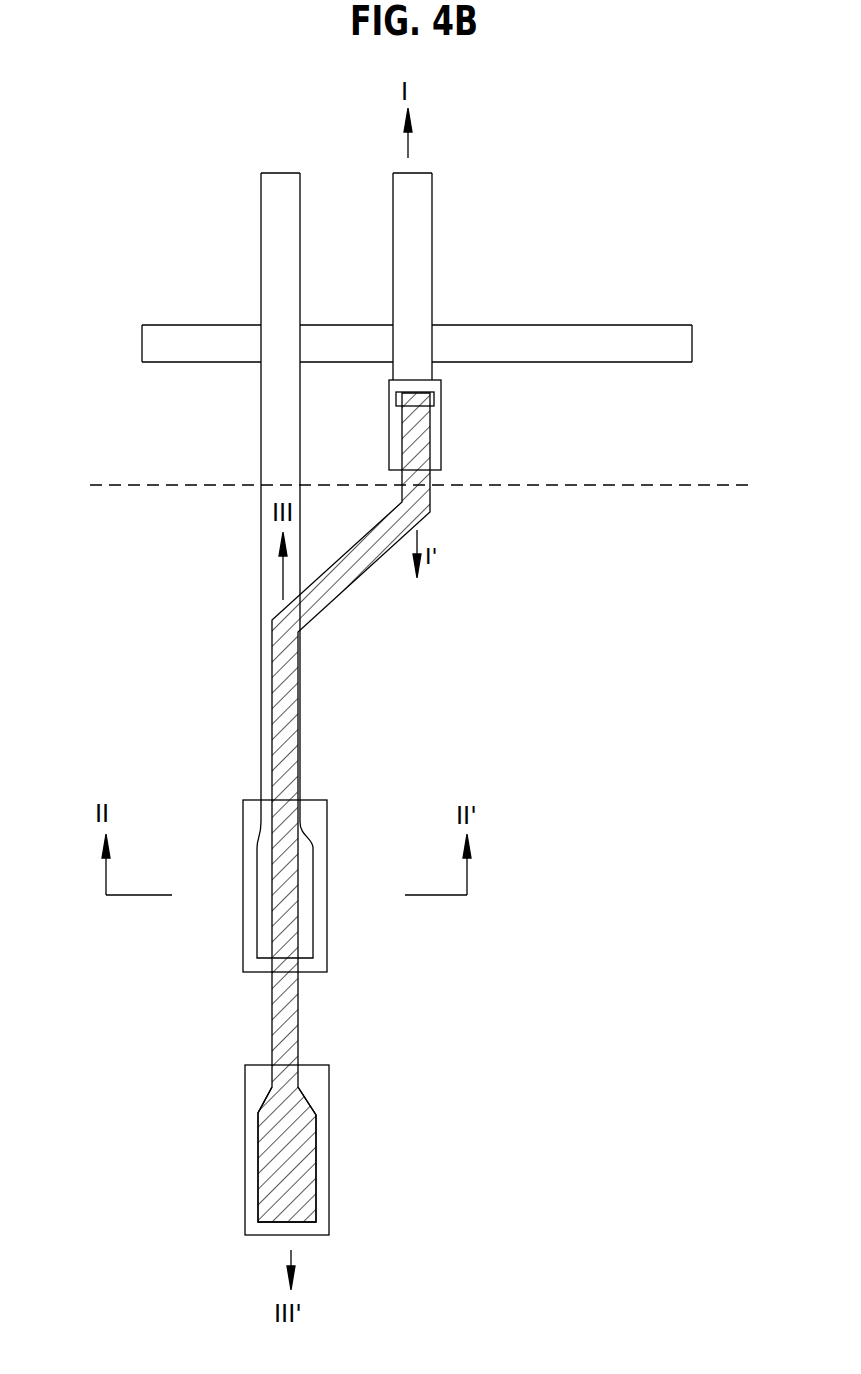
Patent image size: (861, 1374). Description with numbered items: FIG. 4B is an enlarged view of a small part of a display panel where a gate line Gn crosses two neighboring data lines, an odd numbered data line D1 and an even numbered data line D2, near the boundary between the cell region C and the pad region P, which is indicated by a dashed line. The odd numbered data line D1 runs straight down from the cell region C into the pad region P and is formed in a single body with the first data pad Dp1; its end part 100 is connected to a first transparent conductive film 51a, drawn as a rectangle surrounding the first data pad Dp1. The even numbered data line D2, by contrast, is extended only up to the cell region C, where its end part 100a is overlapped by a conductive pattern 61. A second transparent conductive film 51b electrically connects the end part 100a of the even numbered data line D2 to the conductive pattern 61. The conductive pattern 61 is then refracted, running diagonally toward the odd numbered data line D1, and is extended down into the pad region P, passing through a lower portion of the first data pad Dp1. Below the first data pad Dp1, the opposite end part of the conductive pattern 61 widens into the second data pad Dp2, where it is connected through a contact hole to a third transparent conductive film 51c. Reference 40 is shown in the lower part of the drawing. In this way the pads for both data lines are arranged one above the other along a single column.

The gate line Gn is at (145, 340).
The odd numbered data line D1 is at (262, 250).
The even numbered data line D2 is at (394, 250).
The cell region C is at (714, 348).
The pad region P is at (714, 569).
The second transparent conductive film 51b is at (441, 452).
The end part of even numbered data line 100a is at (434, 400).
The conductive pattern 61 is at (338, 583).
The end part of odd numbered data line 100 is at (303, 960).
The first transparent conductive film 51a is at (243, 954).
The first data pad Dp1 is at (313, 857).
The third transparent conductive film 51c is at (245, 1184).
The second data pad Dp2 is at (316, 1163).
The pixel 40 is at (455, 1238).